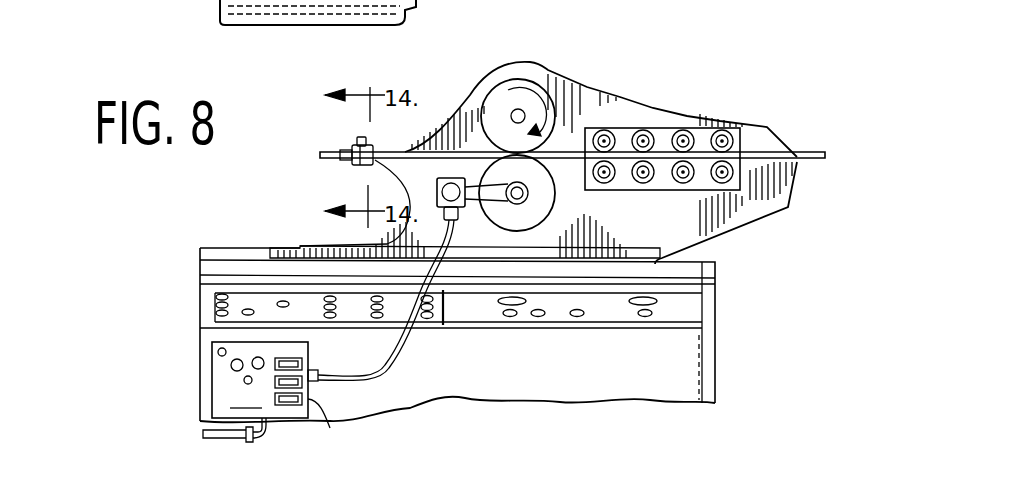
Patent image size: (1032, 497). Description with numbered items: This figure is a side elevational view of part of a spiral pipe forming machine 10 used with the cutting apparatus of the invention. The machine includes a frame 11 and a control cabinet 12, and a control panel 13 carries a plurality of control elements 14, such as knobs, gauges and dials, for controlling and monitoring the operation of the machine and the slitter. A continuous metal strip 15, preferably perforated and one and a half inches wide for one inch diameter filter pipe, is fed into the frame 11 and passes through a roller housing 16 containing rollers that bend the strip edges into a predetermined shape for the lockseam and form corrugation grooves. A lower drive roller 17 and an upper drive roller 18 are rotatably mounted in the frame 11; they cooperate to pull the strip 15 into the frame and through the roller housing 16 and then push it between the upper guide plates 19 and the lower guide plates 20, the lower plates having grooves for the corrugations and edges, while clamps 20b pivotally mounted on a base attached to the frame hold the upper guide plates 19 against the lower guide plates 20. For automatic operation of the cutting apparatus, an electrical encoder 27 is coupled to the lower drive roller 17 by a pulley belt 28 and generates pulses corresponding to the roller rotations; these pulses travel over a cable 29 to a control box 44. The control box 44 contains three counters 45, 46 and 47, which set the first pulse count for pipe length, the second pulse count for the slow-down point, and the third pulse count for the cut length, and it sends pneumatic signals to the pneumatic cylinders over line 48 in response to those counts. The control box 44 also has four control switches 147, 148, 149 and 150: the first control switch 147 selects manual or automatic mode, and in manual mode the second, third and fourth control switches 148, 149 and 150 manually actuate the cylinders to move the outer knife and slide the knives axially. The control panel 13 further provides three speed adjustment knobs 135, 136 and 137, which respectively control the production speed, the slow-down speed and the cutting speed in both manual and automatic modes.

The pipe forming machine 10 is at (612, 96).
The frame 11 is at (748, 205).
The control cabinet 12 is at (715, 362).
The control panel 13 is at (698, 308).
The control elements 14 is at (436, 326).
The continuous metal strip 15 is at (806, 150).
The roller housing 16 is at (658, 192).
The lower drive roller 17 is at (546, 208).
The upper drive roller 18 is at (524, 92).
The upper guide plates 19 is at (367, 147).
The lower guide plates 20 is at (350, 162).
The clamps 20b is at (357, 146).
The electrical encoder 27 is at (437, 186).
The pulley belt 28 is at (488, 206).
The cable 29 is at (448, 247).
The control box 44 is at (260, 380).
The first counter 45 is at (310, 346).
The second counter 46 is at (312, 381).
The third counter 47 is at (330, 428).
The line 48 is at (262, 434).
The first speed adjustment knob 135 is at (282, 305).
The second speed adjustment knob 136 is at (250, 308).
The third speed adjustment knob 137 is at (216, 303).
The first control switch 147 is at (244, 381).
The second control switch 148 is at (231, 366).
The third control switch 149 is at (254, 360).
The fourth control switch 150 is at (218, 352).